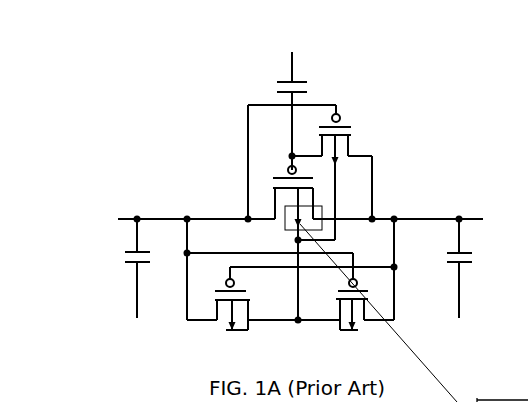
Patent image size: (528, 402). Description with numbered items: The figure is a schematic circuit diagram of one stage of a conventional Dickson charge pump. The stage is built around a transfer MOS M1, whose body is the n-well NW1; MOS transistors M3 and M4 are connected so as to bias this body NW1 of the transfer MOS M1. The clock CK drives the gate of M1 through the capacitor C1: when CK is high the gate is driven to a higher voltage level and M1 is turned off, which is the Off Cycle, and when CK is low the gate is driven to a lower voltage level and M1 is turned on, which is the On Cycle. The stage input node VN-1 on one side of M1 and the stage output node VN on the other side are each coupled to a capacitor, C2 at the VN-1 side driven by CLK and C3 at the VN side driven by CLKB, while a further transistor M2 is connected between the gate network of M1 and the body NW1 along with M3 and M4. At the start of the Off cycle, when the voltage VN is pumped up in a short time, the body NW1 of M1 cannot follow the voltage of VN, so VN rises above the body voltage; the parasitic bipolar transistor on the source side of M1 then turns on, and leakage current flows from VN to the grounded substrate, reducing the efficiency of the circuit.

The capacitor C1 is at (274, 122).
The clock capacitor C2 is at (123, 268).
The clock capacitor C3 is at (445, 268).
The transfer MOS M1 is at (359, 284).
The transistor M2 is at (339, 172).
The MOS transistor M3 is at (247, 304).
The MOS transistor M4 is at (336, 304).
The body of M1 NW1 is at (290, 295).
The clock CK is at (290, 55).
The clock signal CLK is at (137, 338).
The complementary clock signal CLKB is at (455, 339).
The previous stage node voltage VN-1 is at (196, 206).
The VN voltage VN is at (398, 206).